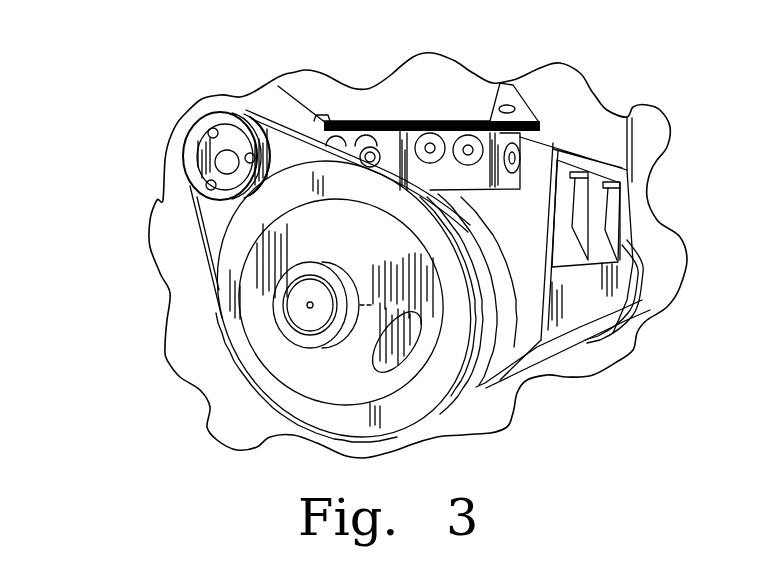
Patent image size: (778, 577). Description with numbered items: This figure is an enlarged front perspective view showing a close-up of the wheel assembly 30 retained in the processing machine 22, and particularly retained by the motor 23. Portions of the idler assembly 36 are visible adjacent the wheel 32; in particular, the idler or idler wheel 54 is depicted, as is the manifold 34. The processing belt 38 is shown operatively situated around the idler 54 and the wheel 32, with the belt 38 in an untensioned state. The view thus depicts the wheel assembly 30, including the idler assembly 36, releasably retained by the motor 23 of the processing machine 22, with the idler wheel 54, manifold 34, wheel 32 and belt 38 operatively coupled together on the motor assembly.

The processing machine 22 is at (645, 142).
The motor 23 is at (587, 302).
The wheel assembly 30 is at (140, 379).
The wheel 32 is at (430, 388).
The manifold 34 is at (485, 133).
The idler assembly 36 is at (183, 128).
The processing belt 38 is at (210, 228).
The idler wheel 54 is at (227, 127).